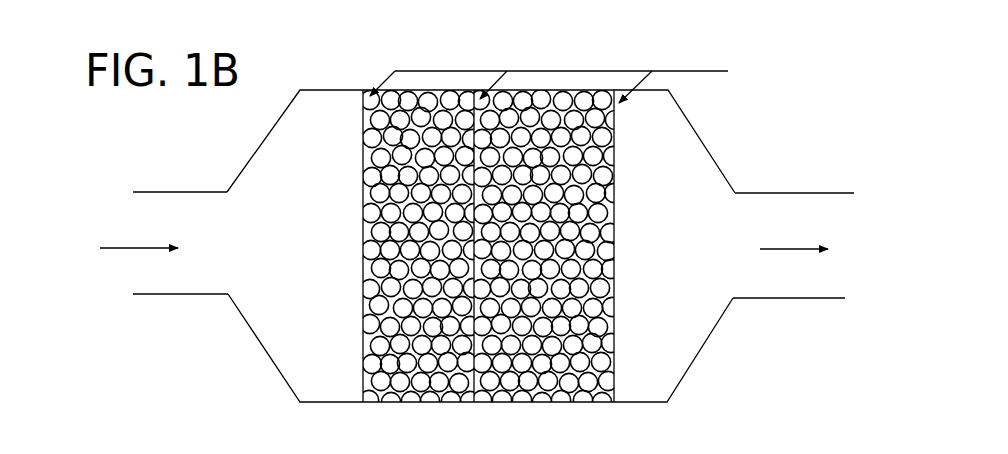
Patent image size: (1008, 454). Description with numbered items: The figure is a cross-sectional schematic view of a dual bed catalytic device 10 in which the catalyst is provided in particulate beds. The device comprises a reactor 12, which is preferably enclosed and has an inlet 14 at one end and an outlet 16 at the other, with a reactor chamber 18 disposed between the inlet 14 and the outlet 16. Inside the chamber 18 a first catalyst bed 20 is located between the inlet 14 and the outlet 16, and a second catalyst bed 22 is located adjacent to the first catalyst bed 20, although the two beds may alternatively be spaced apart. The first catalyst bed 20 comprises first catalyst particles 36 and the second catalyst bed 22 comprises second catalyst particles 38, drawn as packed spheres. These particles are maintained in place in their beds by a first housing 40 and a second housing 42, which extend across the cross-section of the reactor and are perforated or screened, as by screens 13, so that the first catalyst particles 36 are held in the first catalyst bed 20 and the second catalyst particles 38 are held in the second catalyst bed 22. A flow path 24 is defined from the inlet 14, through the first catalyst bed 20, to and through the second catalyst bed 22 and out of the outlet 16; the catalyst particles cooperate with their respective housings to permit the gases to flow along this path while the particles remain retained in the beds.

The catalytic reactor assembly 10 is at (549, 56).
The reactor 12 is at (341, 86).
The screens 13 is at (567, 82).
The inlet 14 is at (152, 192).
The outlet 16 is at (800, 193).
The reactor chamber 18 is at (326, 189).
The first catalyst bed 20 is at (418, 398).
The second catalyst bed 22 is at (568, 367).
The flow path 24 is at (152, 250).
The first catalyst particles 36 is at (445, 378).
The second catalyst particles 38 is at (525, 377).
The first housing 40 is at (365, 378).
The second housing 42 is at (615, 373).